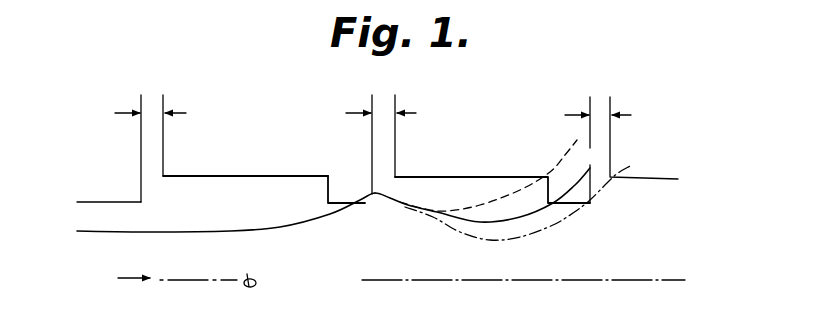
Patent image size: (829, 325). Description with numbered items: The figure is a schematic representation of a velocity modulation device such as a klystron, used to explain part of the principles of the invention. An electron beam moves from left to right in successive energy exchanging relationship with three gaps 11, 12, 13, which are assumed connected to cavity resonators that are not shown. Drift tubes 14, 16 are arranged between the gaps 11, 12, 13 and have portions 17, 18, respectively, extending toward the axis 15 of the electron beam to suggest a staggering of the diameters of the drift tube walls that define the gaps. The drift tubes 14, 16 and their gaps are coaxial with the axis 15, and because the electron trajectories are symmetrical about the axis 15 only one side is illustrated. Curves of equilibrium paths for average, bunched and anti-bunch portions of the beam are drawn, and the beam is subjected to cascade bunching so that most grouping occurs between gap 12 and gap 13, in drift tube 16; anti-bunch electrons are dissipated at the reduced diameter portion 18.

The gap 11 is at (150, 133).
The gap 12 is at (385, 133).
The gap 13 is at (597, 133).
The drift tube 14 is at (177, 167).
The axis of the electron beam 15 is at (583, 283).
The drift tube 16 is at (410, 168).
The portion of drift tube 17 is at (338, 193).
The reduced diameter portion of drift tube 18 is at (577, 198).